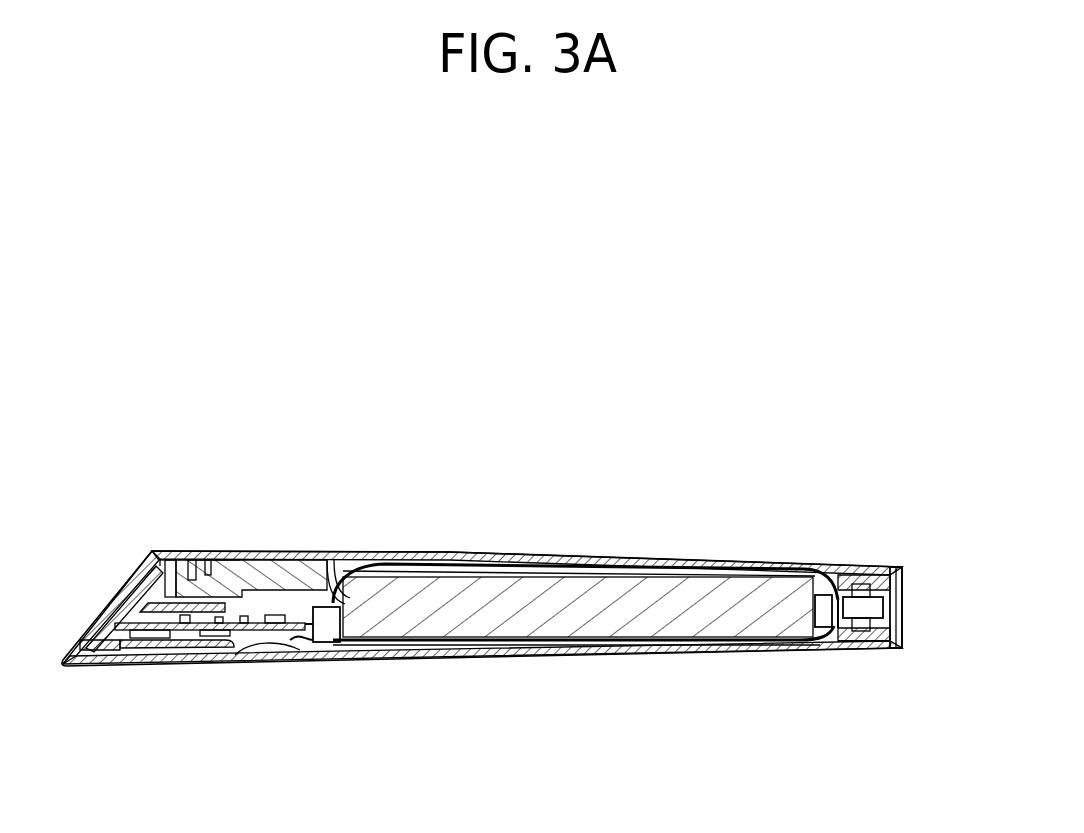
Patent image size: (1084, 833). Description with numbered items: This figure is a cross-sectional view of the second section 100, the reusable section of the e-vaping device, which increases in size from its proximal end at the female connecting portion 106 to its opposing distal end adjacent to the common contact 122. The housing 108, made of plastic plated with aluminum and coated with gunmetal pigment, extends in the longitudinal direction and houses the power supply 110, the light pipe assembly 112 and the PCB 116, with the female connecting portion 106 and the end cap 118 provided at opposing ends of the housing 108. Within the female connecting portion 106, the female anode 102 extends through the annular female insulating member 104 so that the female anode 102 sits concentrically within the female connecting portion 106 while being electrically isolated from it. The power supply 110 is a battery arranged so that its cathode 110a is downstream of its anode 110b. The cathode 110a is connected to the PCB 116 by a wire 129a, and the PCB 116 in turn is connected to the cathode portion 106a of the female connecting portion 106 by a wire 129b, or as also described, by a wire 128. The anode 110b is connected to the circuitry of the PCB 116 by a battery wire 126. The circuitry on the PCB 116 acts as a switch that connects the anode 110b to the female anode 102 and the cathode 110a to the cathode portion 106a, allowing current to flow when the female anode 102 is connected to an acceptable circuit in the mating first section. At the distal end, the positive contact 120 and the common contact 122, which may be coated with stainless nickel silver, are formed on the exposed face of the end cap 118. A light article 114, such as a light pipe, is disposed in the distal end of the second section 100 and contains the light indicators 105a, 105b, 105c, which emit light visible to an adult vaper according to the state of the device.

The second section 100 is at (481, 344).
The female anode 102 is at (905, 637).
The female insulating member 104 is at (855, 568).
The light indicator 105a is at (163, 552).
The light indicator 105b is at (211, 552).
The light indicator 105c is at (228, 552).
The female connecting portion 106 is at (903, 567).
The cathode portion 106a is at (853, 650).
The housing 108 is at (672, 556).
The power supply 110 is at (340, 657).
The cathode 110a is at (793, 565).
The anode 110b is at (318, 655).
The light pipe assembly 112 is at (345, 564).
The light article 114 is at (192, 552).
The PCB 116 is at (237, 655).
The end cap 118 is at (242, 552).
The positive contact 120 is at (140, 552).
The common contact 122 is at (90, 628).
The battery wire 126 is at (265, 663).
The wire 128 is at (450, 560).
The wire 129a is at (537, 632).
The wire 129b is at (497, 660).